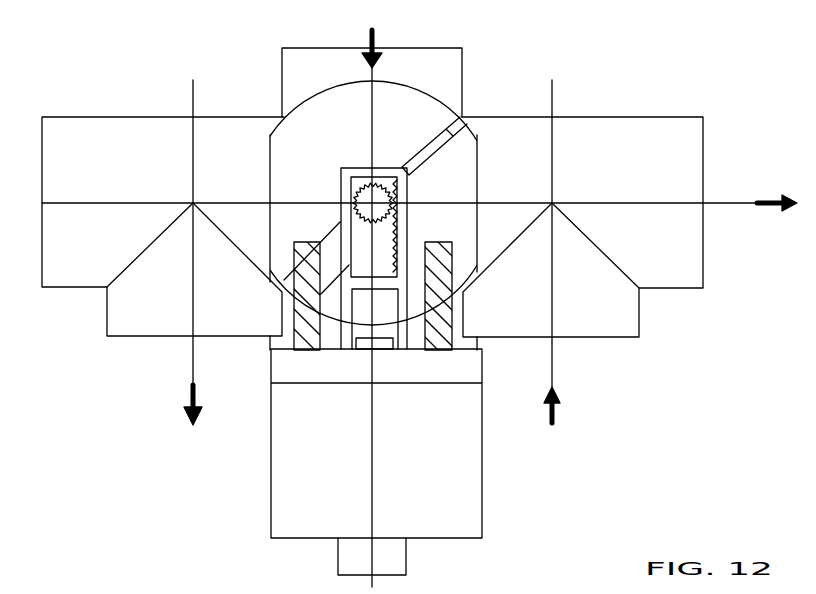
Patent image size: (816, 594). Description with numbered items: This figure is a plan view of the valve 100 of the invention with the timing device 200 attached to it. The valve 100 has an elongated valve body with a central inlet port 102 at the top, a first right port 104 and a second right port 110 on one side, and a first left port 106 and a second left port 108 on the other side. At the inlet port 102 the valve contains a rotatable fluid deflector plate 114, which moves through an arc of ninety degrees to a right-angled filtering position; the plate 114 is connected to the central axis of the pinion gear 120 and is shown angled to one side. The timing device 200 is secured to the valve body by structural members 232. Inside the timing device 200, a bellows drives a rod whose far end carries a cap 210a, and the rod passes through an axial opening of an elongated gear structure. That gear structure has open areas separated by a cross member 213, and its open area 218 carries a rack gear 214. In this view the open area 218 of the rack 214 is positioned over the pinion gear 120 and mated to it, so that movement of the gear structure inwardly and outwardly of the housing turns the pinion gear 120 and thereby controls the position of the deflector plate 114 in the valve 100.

The valve 100 is at (697, 388).
The central inlet port 102 is at (446, 48).
The first right port 104 is at (145, 337).
The first left port 106 is at (595, 338).
The second left port 108 is at (705, 170).
The second right port 110 is at (42, 133).
The fluid deflector plate 114 is at (462, 117).
The pinion gear 120 is at (356, 186).
The timing device 200 is at (498, 460).
The cap 210a is at (363, 351).
The cross member 213 is at (293, 333).
The rack gear 214 is at (400, 240).
The open area 218 is at (387, 259).
The structural members 232 is at (443, 286).